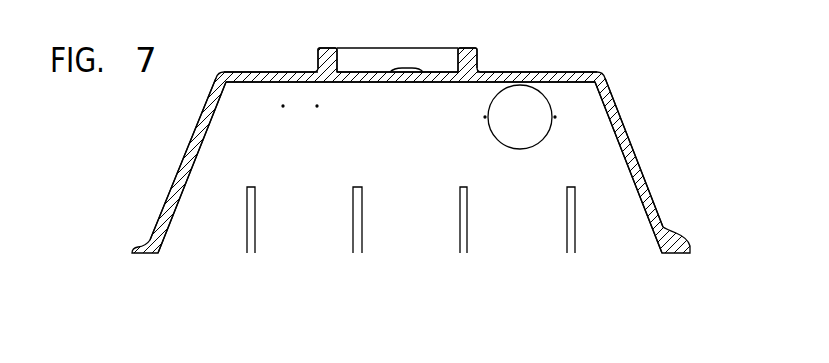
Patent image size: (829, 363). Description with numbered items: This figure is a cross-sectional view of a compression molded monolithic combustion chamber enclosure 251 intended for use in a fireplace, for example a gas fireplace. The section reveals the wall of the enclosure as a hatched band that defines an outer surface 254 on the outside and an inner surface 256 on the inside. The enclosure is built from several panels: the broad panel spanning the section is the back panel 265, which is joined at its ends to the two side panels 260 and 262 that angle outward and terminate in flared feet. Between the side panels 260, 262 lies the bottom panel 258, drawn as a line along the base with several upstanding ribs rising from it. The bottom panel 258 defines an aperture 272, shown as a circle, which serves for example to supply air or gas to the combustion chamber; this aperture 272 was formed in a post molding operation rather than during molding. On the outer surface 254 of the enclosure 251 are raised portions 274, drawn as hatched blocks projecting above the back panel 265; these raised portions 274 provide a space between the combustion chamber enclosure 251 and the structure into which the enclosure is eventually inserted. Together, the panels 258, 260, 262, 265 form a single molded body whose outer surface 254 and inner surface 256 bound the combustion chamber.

The combustion chamber enclosure 251 is at (637, 71).
The outer surface 254 is at (256, 62).
The inner surface 256 is at (253, 82).
The bottom panel 258 is at (305, 220).
The side panel 260 is at (645, 182).
The side panel 262 is at (177, 188).
The back panel 265 is at (285, 78).
The aperture 272 is at (527, 105).
The raised portions 274 is at (468, 55).